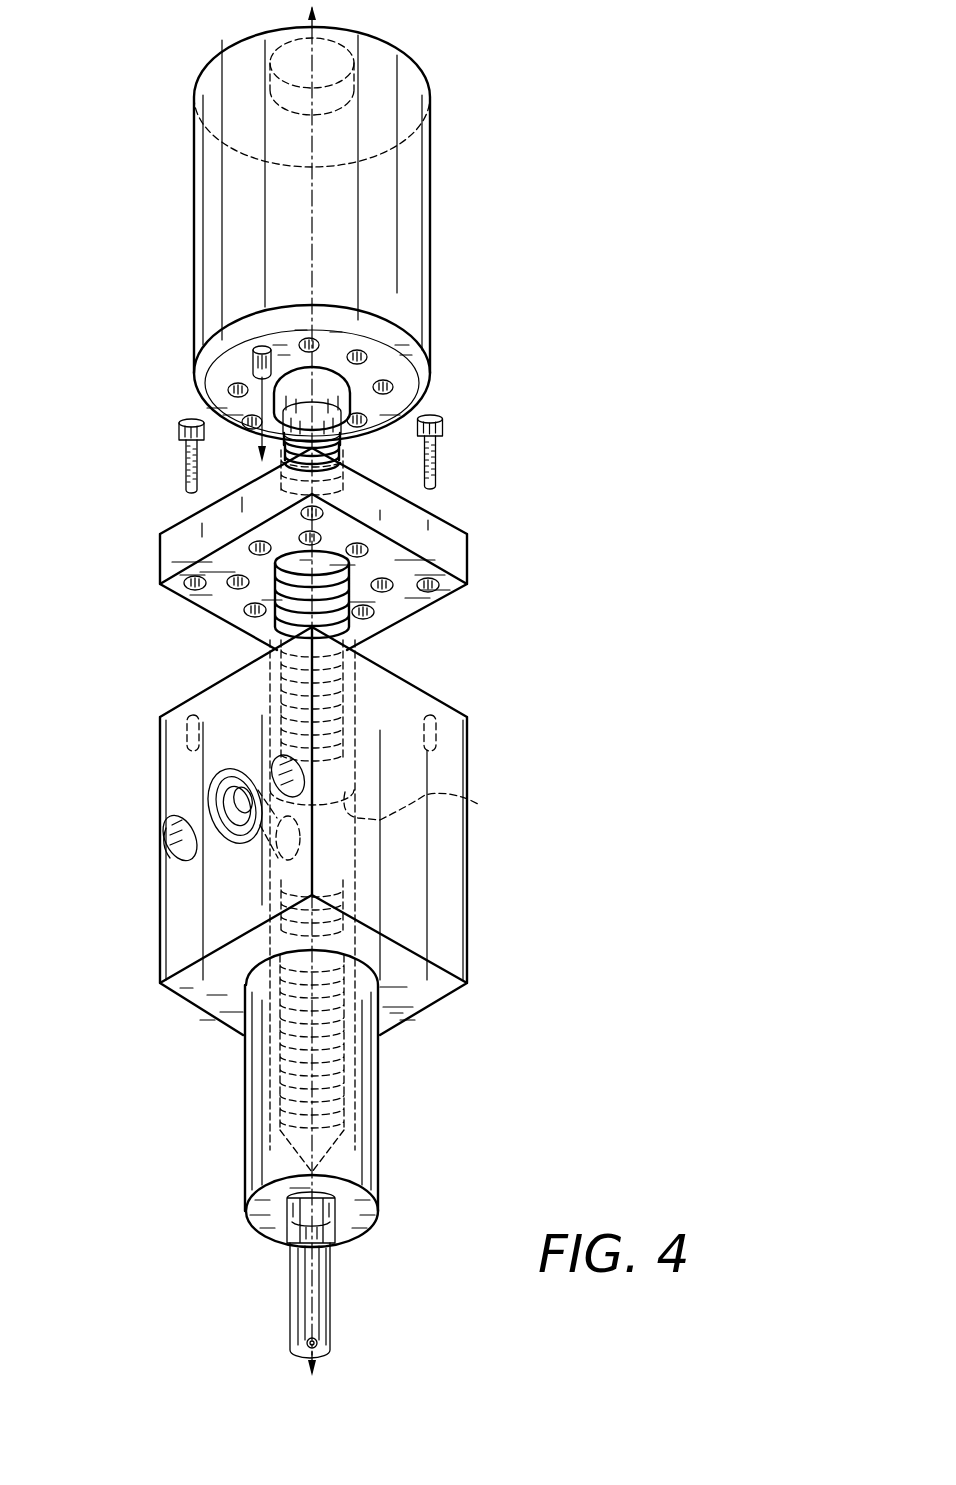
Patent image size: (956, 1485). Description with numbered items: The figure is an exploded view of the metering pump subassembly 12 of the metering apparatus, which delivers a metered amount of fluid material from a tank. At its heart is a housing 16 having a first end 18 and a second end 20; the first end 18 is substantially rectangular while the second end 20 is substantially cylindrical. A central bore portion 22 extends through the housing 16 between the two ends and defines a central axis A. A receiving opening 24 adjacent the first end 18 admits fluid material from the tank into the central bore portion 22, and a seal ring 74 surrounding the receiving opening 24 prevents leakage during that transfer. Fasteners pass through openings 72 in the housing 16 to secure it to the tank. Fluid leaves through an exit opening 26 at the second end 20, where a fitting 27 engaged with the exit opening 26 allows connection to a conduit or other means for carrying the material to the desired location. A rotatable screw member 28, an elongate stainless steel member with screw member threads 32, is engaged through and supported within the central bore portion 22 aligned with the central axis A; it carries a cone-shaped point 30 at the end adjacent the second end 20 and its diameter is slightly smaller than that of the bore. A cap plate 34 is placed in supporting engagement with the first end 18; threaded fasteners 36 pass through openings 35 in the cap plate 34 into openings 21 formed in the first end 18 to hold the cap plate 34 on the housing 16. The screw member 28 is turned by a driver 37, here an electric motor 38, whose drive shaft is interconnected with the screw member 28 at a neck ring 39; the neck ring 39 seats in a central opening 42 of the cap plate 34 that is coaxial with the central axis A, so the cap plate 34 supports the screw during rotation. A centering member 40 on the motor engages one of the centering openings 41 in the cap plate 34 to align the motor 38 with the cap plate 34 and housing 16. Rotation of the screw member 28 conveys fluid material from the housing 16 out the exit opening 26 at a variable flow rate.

The metering pump subassembly 12 is at (140, 285).
The housing 16 is at (423, 1013).
The first end 18 is at (466, 691).
The second end 20 is at (385, 1232).
The openings 21 is at (185, 730).
The central bore portion 22 is at (420, 798).
The receiving opening 24 is at (205, 803).
The exit opening 26 is at (242, 1223).
The fitting 27 is at (330, 1310).
The screw member 28 is at (262, 616).
The cone-shaped point 30 is at (353, 1125).
The screw member threads 32 is at (290, 635).
The cap plate 34 is at (447, 545).
The openings 35 is at (383, 587).
The threaded fasteners 36 is at (440, 455).
The driver 37 is at (445, 280).
The electric motor 38 is at (385, 173).
The neck ring 39 is at (357, 398).
The centering member 40 is at (250, 354).
The centering openings 41 is at (263, 537).
The central opening 42 is at (262, 580).
The openings 72 is at (180, 860).
The seal ring 74 is at (210, 795).
The central axis A is at (318, 238).